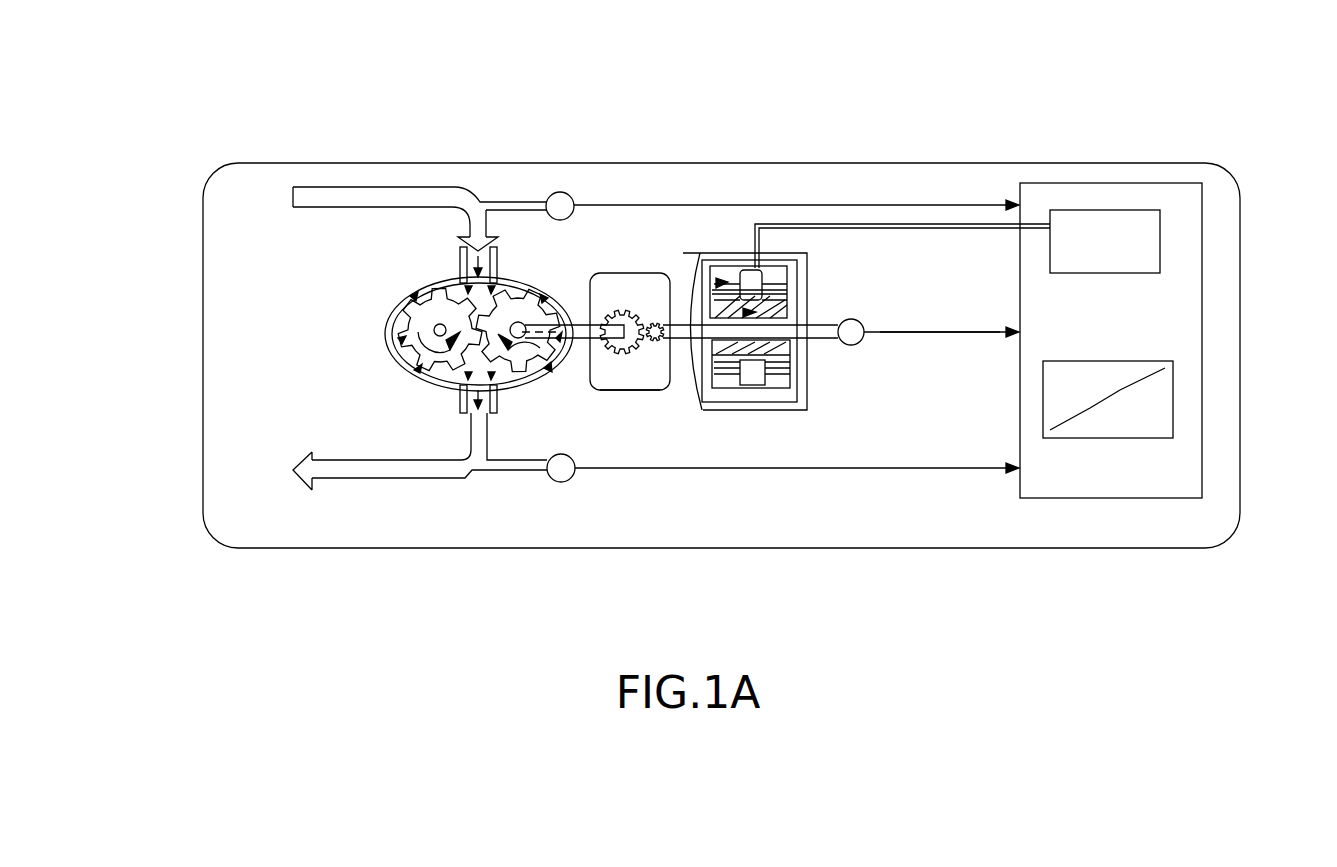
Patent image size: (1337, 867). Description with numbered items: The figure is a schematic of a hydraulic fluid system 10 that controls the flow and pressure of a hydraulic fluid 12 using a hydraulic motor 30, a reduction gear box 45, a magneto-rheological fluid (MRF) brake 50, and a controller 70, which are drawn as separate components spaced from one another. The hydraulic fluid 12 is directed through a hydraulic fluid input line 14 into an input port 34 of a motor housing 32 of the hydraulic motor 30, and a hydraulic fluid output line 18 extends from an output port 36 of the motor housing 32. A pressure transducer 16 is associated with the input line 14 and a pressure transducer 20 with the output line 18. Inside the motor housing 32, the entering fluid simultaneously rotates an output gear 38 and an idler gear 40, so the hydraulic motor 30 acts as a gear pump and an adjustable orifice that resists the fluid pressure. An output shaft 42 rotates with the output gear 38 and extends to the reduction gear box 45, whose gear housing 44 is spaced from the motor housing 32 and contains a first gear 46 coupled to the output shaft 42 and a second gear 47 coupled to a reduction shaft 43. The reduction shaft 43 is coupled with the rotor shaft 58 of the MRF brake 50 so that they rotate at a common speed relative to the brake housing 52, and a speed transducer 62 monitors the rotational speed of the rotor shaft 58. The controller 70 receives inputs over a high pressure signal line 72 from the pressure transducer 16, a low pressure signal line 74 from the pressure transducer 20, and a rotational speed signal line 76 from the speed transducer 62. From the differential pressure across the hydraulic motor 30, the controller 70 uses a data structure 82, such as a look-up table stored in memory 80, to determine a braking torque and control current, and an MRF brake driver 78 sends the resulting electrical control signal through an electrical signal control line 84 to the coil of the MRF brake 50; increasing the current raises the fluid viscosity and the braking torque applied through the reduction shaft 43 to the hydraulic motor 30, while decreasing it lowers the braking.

The hydraulic fluid system 10 is at (1127, 548).
The hydraulic fluid 12 is at (418, 198).
The hydraulic fluid input line 14 is at (358, 187).
The pressure transducer/sensor 16 is at (573, 193).
The hydraulic fluid output line 18 is at (465, 478).
The pressure transducer/sensor 20 is at (572, 478).
The hydraulic motor 30 is at (417, 346).
The motor housing 32 is at (395, 357).
The input port 34 is at (457, 260).
The output port 36 is at (495, 413).
The output gear 38 is at (526, 316).
The idler gear 40 is at (425, 353).
The output shaft 42 is at (616, 342).
The reduction shaft 43 is at (682, 320).
The gear housing 44 is at (625, 390).
The reduction gear box 45 is at (640, 230).
The first gear 46 is at (621, 310).
The second gear 47 is at (652, 345).
The magneto-rheological fluid (MRF) brake 50 is at (743, 277).
The brake housing 52 is at (702, 410).
The rotor shaft 58 is at (844, 319).
The speed transducer/sensor 62 is at (864, 324).
The controller 70 is at (1163, 302).
The high pressure signal line 72 is at (858, 205).
The low pressure signal line 74 is at (840, 470).
The rotational speed signal line 76 is at (946, 335).
The MRF brake driver 78 is at (1095, 210).
The memory 80 is at (1172, 463).
The data structure 82 is at (1173, 413).
The electrical signal control line 84 is at (928, 223).